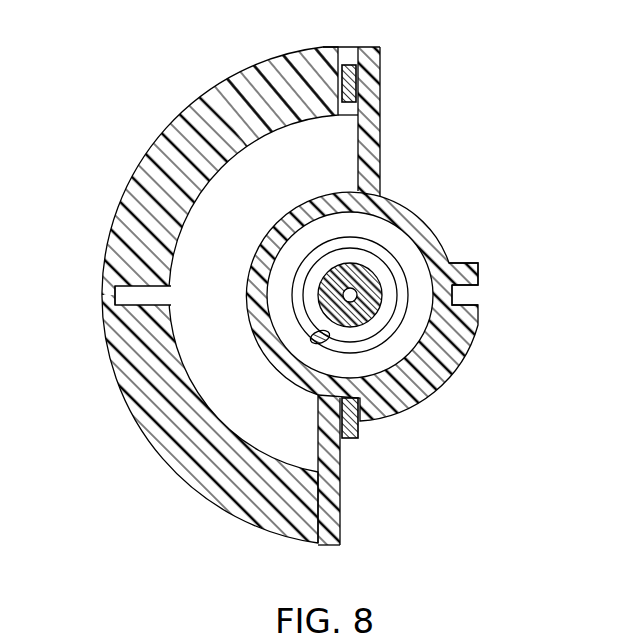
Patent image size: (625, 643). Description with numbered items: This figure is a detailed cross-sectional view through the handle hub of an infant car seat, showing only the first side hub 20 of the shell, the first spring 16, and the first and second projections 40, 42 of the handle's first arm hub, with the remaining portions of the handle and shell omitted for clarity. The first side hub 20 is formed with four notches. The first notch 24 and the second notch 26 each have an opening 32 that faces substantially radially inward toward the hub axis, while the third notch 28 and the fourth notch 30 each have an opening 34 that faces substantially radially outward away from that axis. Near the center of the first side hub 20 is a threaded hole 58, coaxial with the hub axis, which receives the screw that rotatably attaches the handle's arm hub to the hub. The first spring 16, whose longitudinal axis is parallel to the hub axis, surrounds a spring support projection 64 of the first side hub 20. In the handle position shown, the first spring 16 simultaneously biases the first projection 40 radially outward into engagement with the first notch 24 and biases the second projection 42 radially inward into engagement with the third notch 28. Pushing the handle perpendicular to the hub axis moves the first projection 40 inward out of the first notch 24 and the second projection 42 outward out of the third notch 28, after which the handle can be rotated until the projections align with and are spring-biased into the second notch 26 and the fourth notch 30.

The first side hub 20 is at (199, 280).
The first notch 24 is at (345, 64).
The second notch 26 is at (110, 294).
The third notch 28 is at (362, 403).
The fourth notch 30 is at (452, 263).
The opening 32 is at (168, 296).
The opening 34 is at (478, 292).
The first spring 16 is at (378, 306).
The first projection 40 is at (357, 83).
The second projection 42 is at (350, 440).
The threaded hole 58 is at (343, 297).
The spring support projection 64 is at (356, 289).